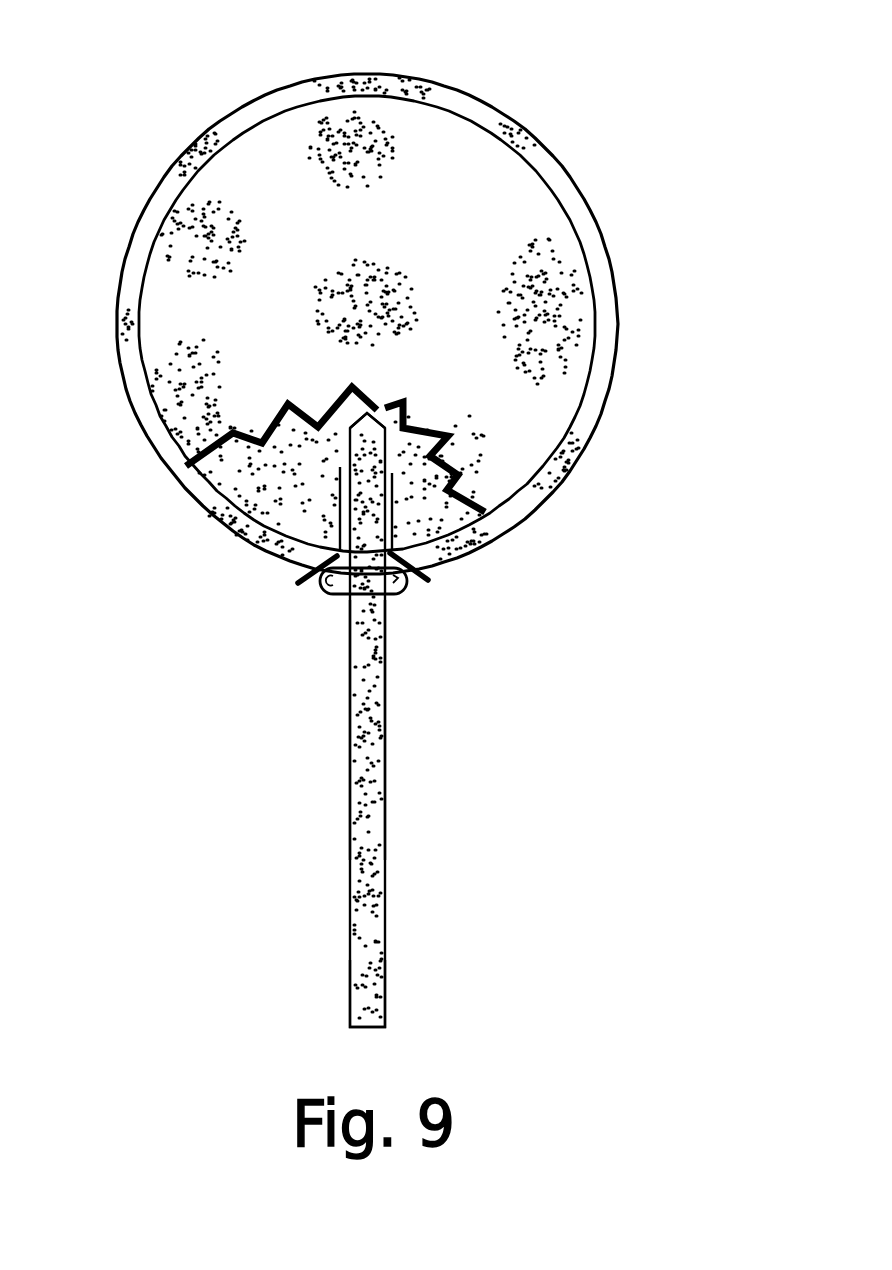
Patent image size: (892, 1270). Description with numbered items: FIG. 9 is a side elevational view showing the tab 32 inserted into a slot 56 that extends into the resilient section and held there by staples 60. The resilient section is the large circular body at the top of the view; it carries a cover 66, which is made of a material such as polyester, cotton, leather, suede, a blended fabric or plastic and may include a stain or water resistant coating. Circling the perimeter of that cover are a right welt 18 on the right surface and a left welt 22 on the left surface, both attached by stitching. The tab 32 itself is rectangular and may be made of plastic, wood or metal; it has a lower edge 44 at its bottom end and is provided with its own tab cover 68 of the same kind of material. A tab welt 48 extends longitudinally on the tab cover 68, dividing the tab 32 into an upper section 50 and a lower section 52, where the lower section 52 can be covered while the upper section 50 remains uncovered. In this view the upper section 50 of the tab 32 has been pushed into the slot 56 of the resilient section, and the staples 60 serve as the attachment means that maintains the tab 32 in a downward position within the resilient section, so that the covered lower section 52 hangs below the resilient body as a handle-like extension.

The right welt 18 is at (612, 321).
The left welt 22 is at (130, 330).
The cover 66 is at (352, 165).
The tab 32 is at (377, 738).
The tab cover 68 is at (370, 778).
The lower edge 44 is at (352, 1027).
The upper section 50 is at (367, 515).
The lower section 52 is at (347, 678).
The slot 56 is at (342, 497).
The staples 60 is at (403, 562).
The tab welt 48 is at (390, 593).